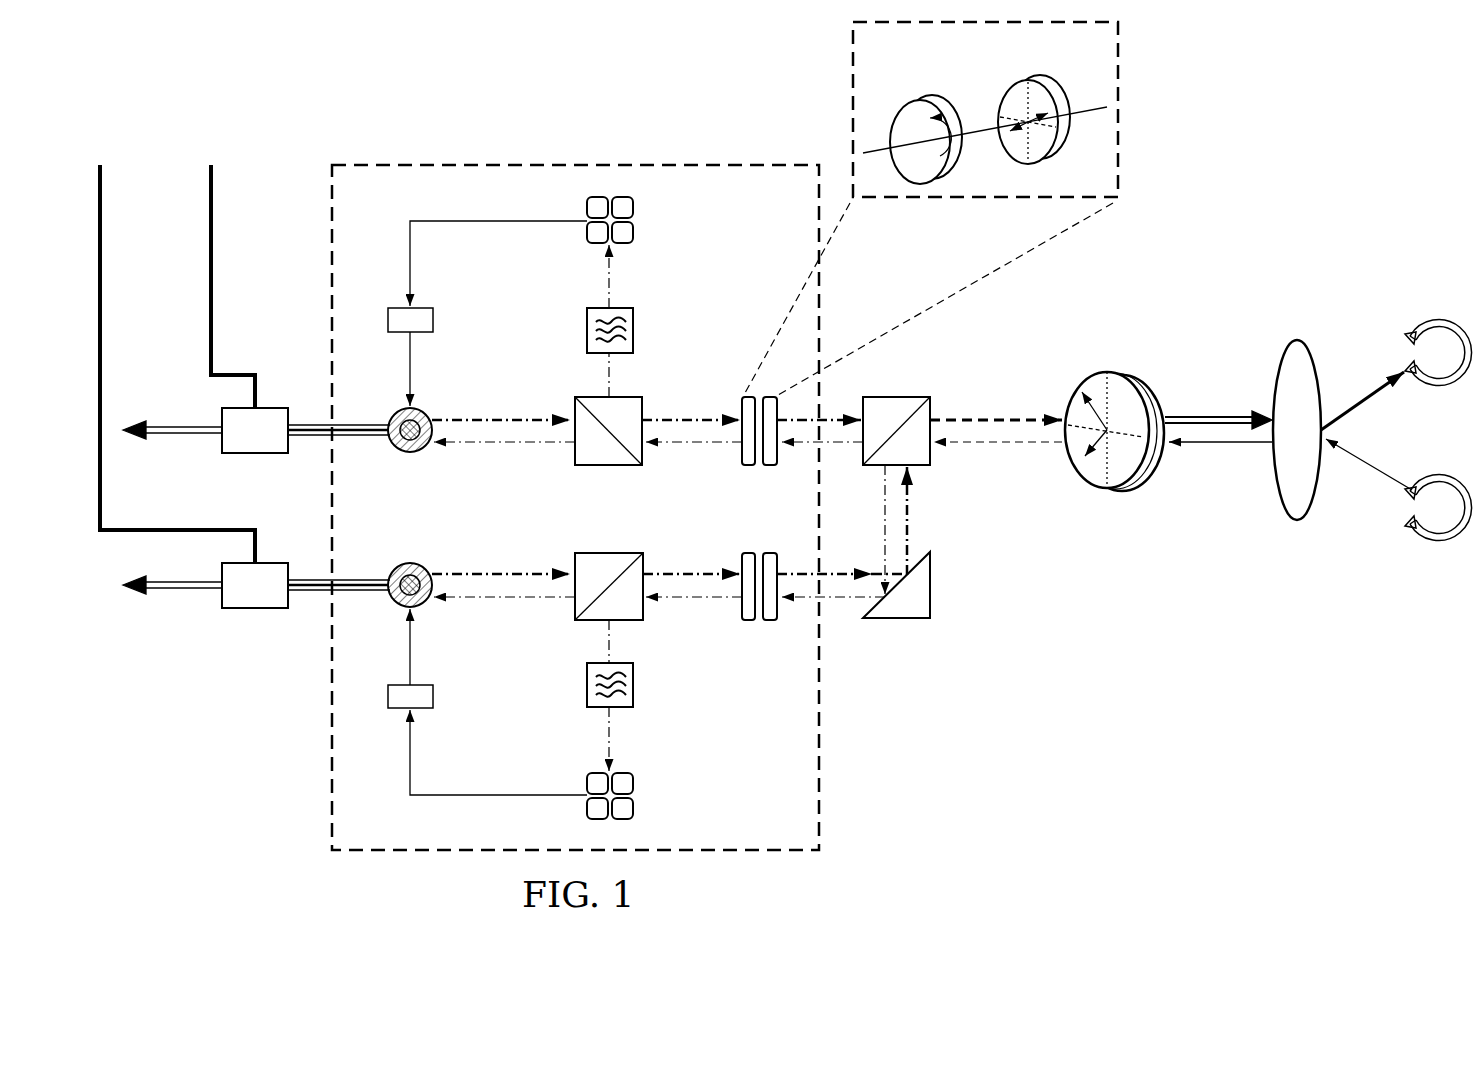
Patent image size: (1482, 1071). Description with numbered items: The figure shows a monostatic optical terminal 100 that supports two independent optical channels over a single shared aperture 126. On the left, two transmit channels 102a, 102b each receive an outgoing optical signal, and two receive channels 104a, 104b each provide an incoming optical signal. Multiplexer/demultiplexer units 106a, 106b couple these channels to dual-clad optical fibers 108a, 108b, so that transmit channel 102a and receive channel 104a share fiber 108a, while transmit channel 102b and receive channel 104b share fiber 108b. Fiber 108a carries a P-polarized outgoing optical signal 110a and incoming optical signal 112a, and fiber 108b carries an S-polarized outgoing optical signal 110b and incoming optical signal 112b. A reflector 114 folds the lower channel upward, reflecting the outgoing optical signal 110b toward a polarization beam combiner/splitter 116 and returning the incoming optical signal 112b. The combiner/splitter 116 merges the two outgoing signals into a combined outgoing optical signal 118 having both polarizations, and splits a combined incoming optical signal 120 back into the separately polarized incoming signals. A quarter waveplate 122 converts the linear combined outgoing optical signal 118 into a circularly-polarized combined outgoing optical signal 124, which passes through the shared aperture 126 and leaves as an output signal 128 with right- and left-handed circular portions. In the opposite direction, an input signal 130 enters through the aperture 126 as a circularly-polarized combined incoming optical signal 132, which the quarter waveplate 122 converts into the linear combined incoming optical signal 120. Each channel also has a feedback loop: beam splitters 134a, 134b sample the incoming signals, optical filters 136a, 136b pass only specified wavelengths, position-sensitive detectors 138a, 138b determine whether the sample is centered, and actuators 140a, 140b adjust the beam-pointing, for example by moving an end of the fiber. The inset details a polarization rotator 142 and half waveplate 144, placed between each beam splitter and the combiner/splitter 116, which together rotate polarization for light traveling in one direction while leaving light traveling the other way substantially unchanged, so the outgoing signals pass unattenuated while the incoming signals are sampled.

The monostatic optical terminal 100 is at (1332, 142).
The transmit channel 102a is at (212, 278).
The transmit channel 102b is at (101, 278).
The receive channel 104a is at (179, 424).
The receive channel 104b is at (184, 594).
The multiplexer/demultiplexer unit 106a is at (245, 455).
The multiplexer/demultiplexer unit 106b is at (245, 610).
The dual-clad optical fiber 108a is at (396, 452).
The dual-clad optical fiber 108b is at (396, 608).
The outgoing optical signal 110a is at (492, 413).
The outgoing optical signal 110b is at (477, 569).
The incoming optical signal 112a is at (512, 446).
The incoming optical signal 112b is at (496, 601).
The reflector 114 is at (932, 588).
The polarization beam combiner/splitter 116 is at (904, 395).
The combined outgoing optical signal 118 is at (990, 417).
The combined incoming optical signal 120 is at (1004, 447).
The quarter waveplate 122 is at (1130, 490).
The circularly-polarized combined outgoing optical signal 124 is at (1200, 417).
The shared aperture 126 is at (1297, 342).
The output signal 128 is at (1372, 392).
The input signal 130 is at (1372, 470).
The circularly-polarized combined incoming optical signal 132 is at (1216, 447).
The beam splitter 134a is at (600, 466).
The beam splitter 134b is at (632, 551).
The optical filter 136a is at (635, 335).
The optical filter 136b is at (635, 689).
The position-sensitive detector 138a is at (635, 214).
The position-sensitive detector 138b is at (635, 809).
The actuator 140a is at (434, 322).
The actuator 140b is at (434, 699).
The polarization rotator 142 is at (908, 100).
The half waveplate 144 is at (1021, 80).